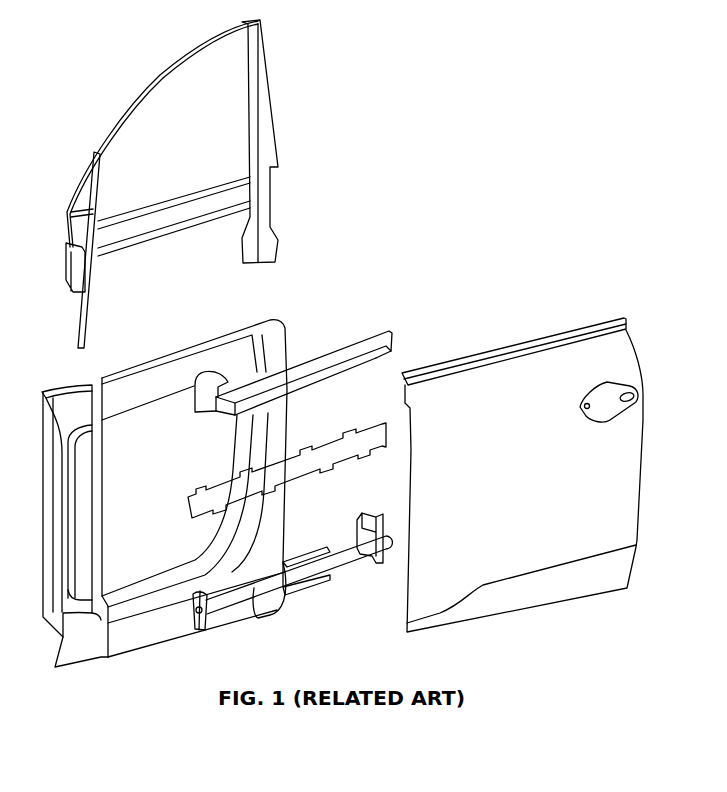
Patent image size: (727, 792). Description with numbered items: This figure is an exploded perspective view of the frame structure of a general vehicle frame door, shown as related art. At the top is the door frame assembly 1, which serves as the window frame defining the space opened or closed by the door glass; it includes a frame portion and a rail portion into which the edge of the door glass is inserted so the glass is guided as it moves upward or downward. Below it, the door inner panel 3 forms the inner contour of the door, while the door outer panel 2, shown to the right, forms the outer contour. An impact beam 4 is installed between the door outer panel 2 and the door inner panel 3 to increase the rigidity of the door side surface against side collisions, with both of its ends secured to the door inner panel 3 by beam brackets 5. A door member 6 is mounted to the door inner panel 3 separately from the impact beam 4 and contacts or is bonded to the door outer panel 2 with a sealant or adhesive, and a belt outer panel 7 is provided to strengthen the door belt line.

The door frame assembly 1 is at (286, 119).
The door outer panel 2 is at (511, 370).
The door inner panel 3 is at (222, 355).
The impact beam 4 is at (246, 591).
The beam bracket 5 is at (208, 620).
The door member 6 is at (316, 463).
The belt outer panel 7 is at (351, 332).